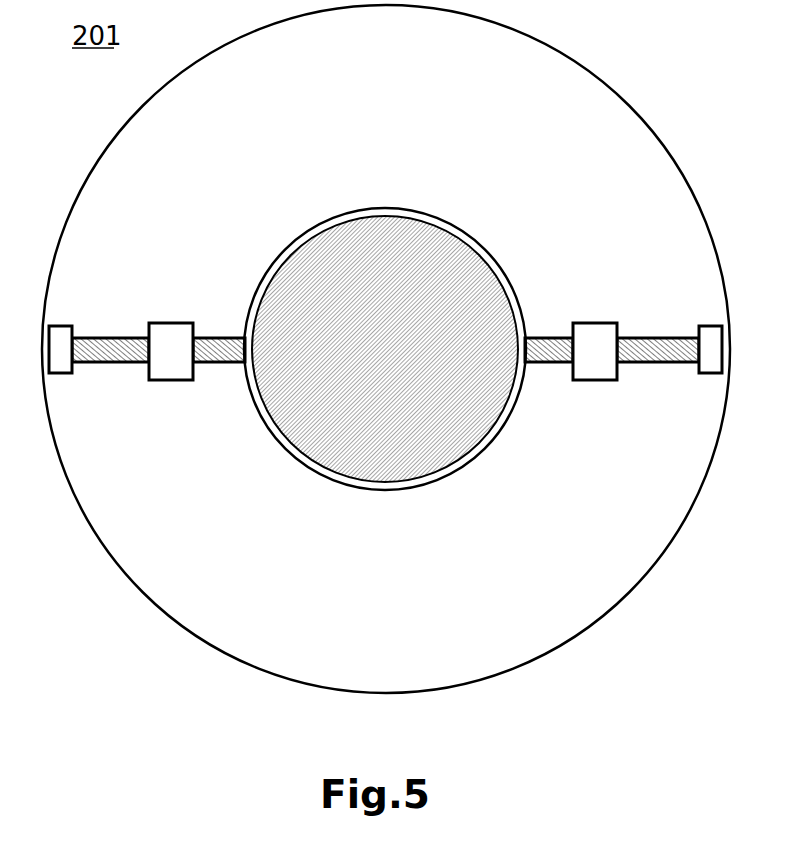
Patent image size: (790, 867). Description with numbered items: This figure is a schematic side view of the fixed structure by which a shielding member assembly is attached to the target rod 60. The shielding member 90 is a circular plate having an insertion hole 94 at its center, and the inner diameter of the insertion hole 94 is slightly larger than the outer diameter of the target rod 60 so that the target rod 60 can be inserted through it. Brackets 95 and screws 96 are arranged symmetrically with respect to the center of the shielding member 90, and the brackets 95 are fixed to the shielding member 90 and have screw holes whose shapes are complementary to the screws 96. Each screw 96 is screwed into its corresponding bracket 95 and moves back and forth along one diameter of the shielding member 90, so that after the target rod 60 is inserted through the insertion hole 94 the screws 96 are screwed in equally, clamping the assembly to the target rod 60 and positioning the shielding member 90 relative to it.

The shielding member 90 is at (597, 80).
The target rod 60 is at (388, 222).
The insertion hole 94 is at (296, 451).
The bracket 95 is at (171, 380).
The screw 96 is at (62, 374).